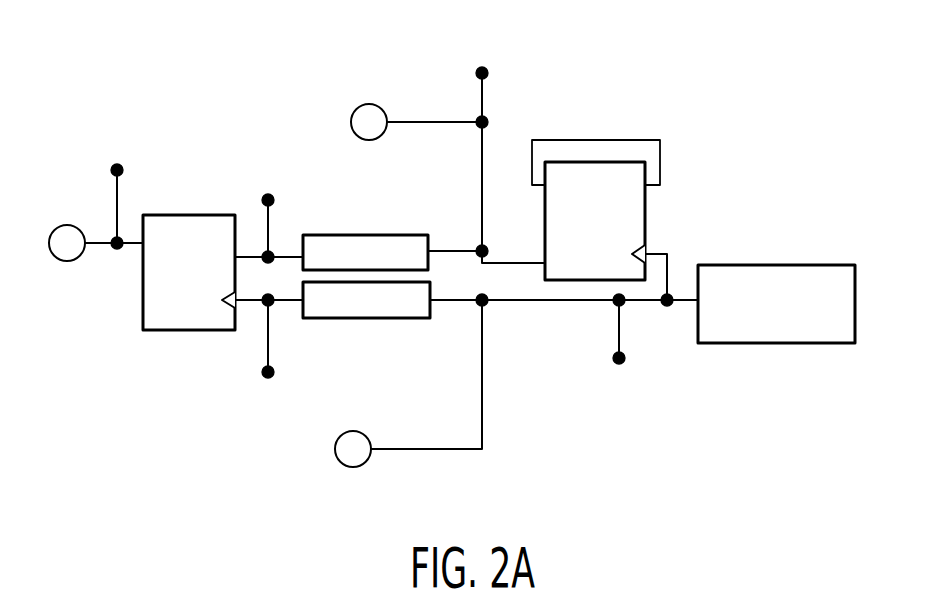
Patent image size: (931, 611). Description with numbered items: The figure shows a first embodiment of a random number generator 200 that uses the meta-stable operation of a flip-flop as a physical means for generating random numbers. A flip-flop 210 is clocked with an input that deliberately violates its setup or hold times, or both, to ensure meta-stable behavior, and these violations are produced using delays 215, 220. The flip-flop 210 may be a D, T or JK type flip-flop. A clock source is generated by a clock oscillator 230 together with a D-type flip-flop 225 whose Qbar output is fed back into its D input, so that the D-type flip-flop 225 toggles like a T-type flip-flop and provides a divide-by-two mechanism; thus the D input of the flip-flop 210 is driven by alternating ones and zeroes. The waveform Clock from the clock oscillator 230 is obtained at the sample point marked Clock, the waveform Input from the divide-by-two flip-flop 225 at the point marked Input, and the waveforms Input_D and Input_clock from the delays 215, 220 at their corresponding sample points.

The random number generator 200 is at (196, 96).
The flip-flop 210 is at (143, 308).
The delay 215 is at (370, 235).
The delay 220 is at (392, 318).
The D-type flip-flop 225 is at (648, 207).
The clock oscillator 230 is at (780, 343).